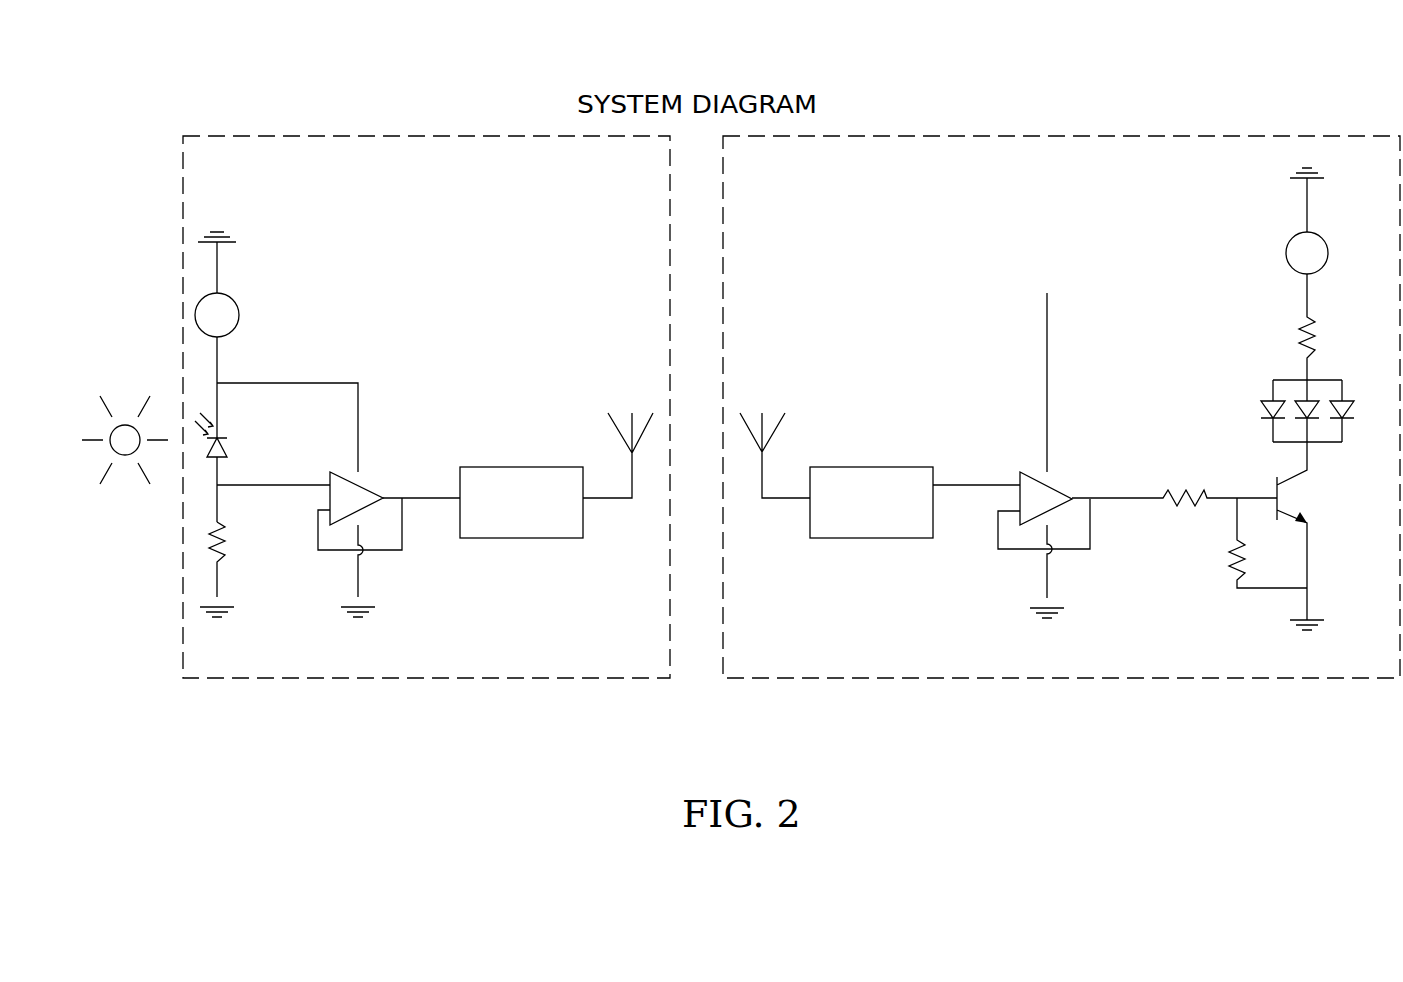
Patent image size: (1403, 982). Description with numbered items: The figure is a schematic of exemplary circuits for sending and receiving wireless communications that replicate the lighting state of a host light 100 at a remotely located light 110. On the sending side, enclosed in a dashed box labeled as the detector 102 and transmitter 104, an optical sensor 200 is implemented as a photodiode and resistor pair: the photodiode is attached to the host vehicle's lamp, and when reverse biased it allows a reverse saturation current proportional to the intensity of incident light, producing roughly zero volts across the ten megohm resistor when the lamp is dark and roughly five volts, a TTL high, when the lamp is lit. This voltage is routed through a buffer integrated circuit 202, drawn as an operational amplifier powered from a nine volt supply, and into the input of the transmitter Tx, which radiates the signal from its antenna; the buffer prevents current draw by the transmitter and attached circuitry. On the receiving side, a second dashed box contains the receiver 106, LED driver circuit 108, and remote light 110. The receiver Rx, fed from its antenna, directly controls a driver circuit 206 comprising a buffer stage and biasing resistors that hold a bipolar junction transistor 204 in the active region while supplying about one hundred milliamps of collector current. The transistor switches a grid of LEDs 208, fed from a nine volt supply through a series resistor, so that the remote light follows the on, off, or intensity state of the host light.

The host light 100 is at (110, 430).
The optical detector 102 is at (426, 375).
The wireless transmitter 104 is at (453, 133).
The wireless receiver 106 is at (1061, 360).
The LED driver circuit 108 is at (1061, 360).
The remote light 110 is at (955, 135).
The optical sensor 200 is at (305, 363).
The buffer integrated circuit 202 is at (420, 448).
The bipolar junction transistor 204 is at (1322, 517).
The driver circuit 206 is at (970, 558).
The LEDs 208 is at (1335, 452).